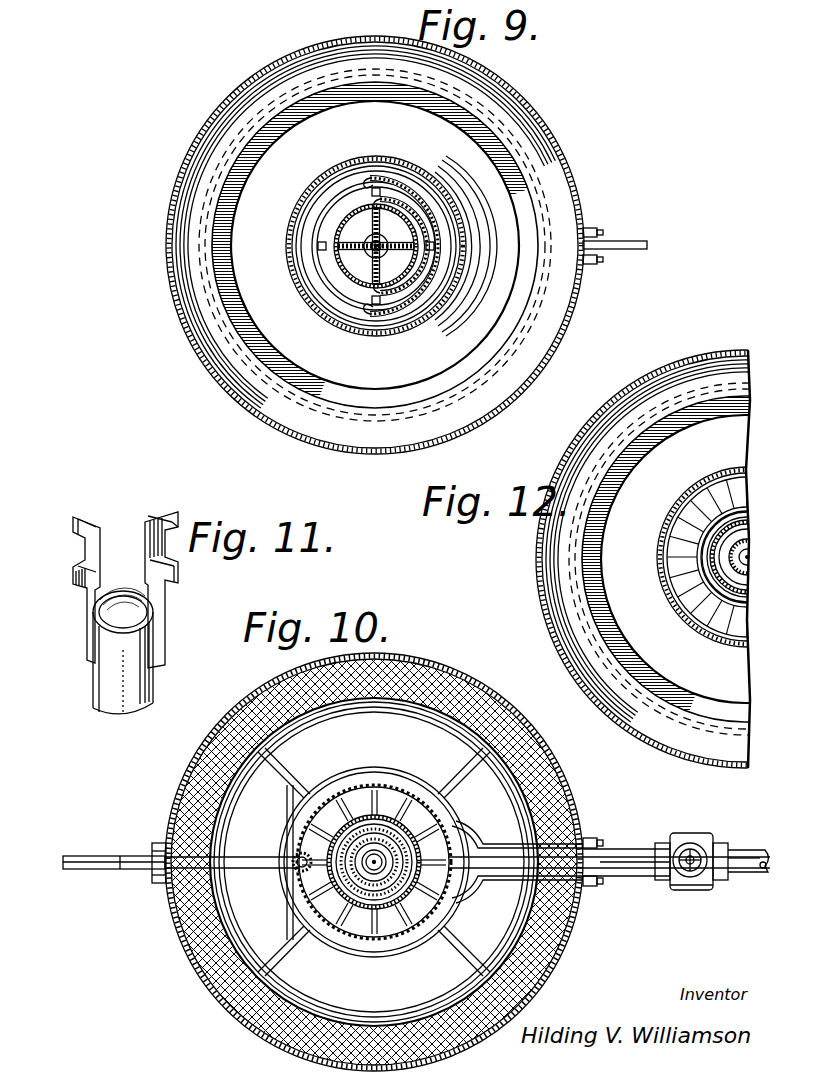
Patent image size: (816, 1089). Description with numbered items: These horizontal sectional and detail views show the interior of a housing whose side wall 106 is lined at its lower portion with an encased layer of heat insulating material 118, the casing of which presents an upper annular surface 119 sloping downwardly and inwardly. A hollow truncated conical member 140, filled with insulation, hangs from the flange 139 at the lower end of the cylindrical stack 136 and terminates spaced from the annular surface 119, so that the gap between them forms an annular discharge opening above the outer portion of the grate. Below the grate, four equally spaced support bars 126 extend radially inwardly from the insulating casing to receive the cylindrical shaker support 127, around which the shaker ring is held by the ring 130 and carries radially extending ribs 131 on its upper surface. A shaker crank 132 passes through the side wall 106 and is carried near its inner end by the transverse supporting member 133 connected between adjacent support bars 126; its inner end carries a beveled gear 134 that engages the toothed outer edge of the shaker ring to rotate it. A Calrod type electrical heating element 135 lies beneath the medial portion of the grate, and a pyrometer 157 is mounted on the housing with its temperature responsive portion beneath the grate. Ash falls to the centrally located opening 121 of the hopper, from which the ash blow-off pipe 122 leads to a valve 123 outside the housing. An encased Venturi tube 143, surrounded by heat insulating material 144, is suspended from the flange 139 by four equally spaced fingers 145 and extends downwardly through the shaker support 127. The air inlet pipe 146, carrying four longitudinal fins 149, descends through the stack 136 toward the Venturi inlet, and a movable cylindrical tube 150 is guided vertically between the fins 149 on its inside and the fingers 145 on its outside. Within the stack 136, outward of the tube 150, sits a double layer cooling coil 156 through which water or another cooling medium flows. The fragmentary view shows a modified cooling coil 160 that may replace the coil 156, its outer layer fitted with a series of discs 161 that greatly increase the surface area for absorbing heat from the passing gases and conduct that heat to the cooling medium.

In FIG. 9, the side wall 106 is at (537, 140).
In FIG. 12, the side wall 106 is at (676, 559).
In FIG. 10, the side wall 106 is at (532, 718).
In FIG. 10, the heat insulating material 118 is at (548, 748).
In FIG. 9, the upper annular surface 119 is at (552, 197).
In FIG. 10, the centrally located opening 121 is at (340, 790).
In FIG. 10, the ash blow-off pipe 122 is at (628, 846).
In FIG. 10, the valve 123 is at (692, 832).
In FIG. 10, the support bars 126 is at (274, 768).
In FIG. 10, the cylindrical shaker support 127 is at (430, 868).
In FIG. 10, the ring 130 is at (436, 798).
In FIG. 10, the ribs 131 is at (120, 870).
In FIG. 10, the shaker crank 132 is at (285, 798).
In FIG. 10, the transverse supporting member 133 is at (298, 857).
In FIG. 10, the beveled gear 134 is at (440, 826).
In FIG. 9, the electrical heating element 135 is at (586, 233).
In FIG. 9, the cylindrical stack 136 is at (403, 218).
In FIG. 9, the flange 139 is at (322, 300).
In FIG. 9, the hollow truncated conical member 140 is at (505, 214).
In FIG. 11, the Venturi tube 143 is at (160, 676).
In FIG. 10, the Venturi tube 143 is at (420, 893).
In FIG. 10, the heat insulating material 144 is at (408, 930).
In FIG. 9, the fingers 145 is at (434, 247).
In FIG. 11, the fingers 145 is at (86, 520).
In FIG. 9, the air inlet pipe 146 is at (352, 256).
In FIG. 9, the fins 149 is at (412, 240).
In FIG. 9, the movable cylindrical tube 150 is at (350, 228).
In FIG. 9, the double layer cooling coil 156 is at (372, 180).
In FIG. 9, the pyrometer 157 is at (627, 242).
In FIG. 10, the pyrometer 157 is at (650, 876).
In FIG. 12, the modified cooling coil 160 is at (718, 634).
In FIG. 12, the discs 161 is at (696, 630).